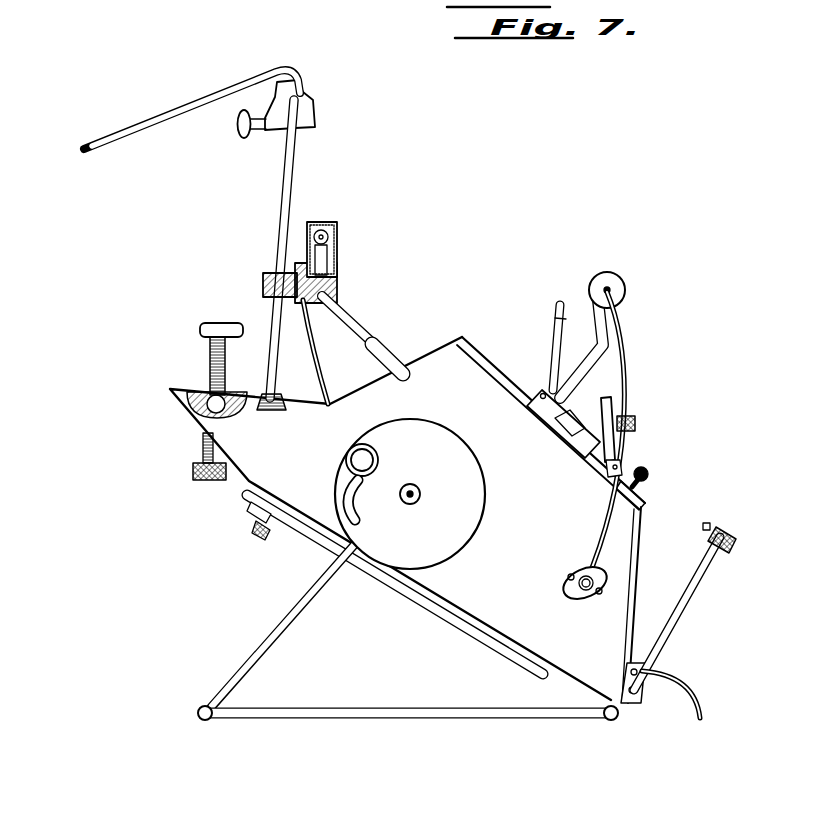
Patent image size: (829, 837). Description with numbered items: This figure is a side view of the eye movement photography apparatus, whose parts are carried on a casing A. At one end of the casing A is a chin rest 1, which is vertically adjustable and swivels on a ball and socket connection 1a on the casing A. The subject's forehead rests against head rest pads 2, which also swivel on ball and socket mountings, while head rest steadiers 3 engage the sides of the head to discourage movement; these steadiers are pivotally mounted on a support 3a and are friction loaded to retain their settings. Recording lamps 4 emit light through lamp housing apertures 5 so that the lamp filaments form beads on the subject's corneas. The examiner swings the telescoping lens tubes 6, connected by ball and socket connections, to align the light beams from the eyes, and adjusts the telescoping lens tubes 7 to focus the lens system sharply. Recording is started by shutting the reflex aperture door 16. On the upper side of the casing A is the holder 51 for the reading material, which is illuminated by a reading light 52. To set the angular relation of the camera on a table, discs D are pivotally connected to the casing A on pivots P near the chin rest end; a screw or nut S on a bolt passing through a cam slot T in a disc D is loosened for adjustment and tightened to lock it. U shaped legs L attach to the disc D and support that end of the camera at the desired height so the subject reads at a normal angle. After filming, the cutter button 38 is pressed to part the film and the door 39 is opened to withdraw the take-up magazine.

The chin rest 1 is at (210, 361).
The ball and socket connection 1a is at (188, 398).
The head rest pads 2 is at (242, 136).
The head rest steadiers 3 is at (155, 125).
The support 3a is at (302, 102).
The recording lamps 4 is at (337, 232).
The lamp housing apertures 5 is at (307, 237).
The telescoping lens tubes 6 is at (383, 348).
The telescoping lens tubes 7 is at (350, 322).
The reflex aperture door 16 is at (618, 405).
The cutter button 38 is at (645, 468).
The door 39 is at (694, 588).
The holder 51 is at (604, 358).
The reading light 52 is at (615, 284).
The casing A is at (453, 397).
The discs D is at (421, 453).
The screw or nut S is at (353, 462).
The pivots P is at (420, 491).
The cam slot T is at (352, 497).
The U shaped legs L is at (297, 600).